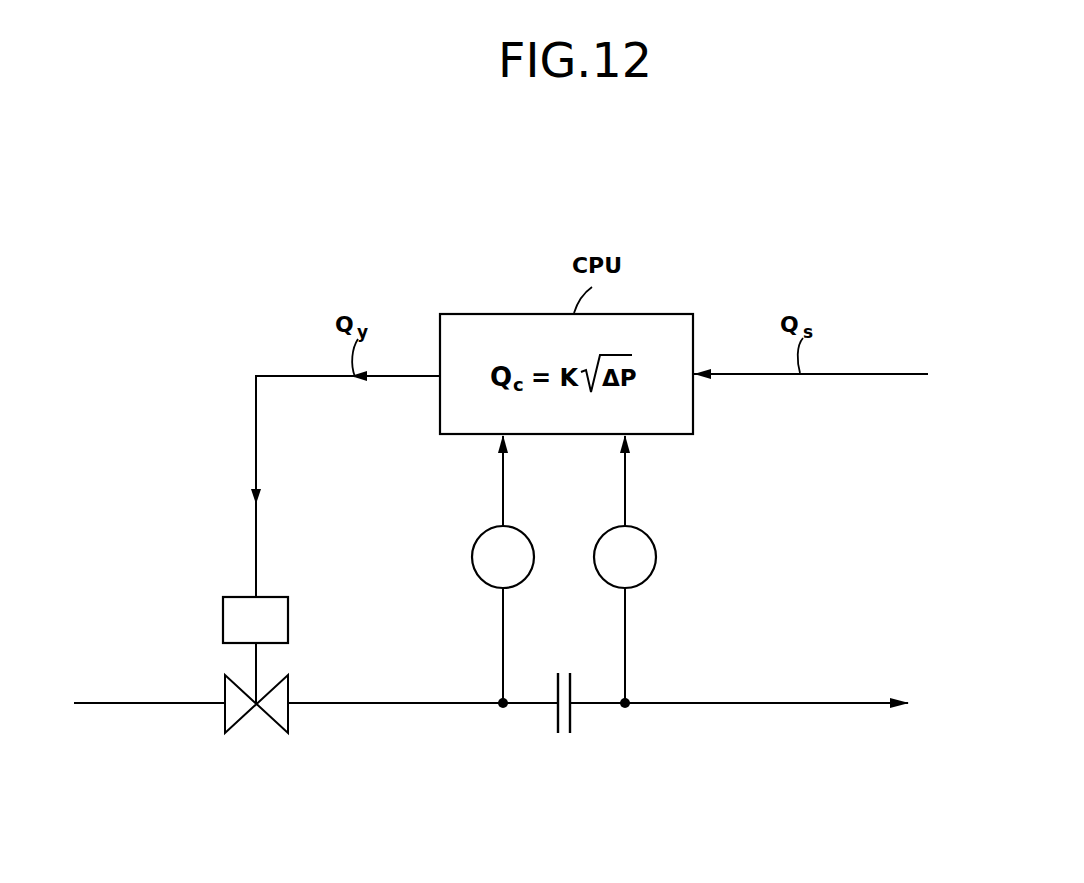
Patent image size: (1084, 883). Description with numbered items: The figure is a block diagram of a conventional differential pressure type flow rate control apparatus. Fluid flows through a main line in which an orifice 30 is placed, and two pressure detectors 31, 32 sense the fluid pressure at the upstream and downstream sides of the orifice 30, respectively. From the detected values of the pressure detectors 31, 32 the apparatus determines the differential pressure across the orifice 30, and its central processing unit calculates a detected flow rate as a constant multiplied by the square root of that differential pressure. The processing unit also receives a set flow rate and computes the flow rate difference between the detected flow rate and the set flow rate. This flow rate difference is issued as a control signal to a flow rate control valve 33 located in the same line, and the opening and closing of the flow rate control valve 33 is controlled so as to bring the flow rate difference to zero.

The orifice 30 is at (572, 720).
The pressure detector 31 is at (490, 538).
The pressure detector 32 is at (648, 558).
The flow rate control valve 33 is at (273, 713).